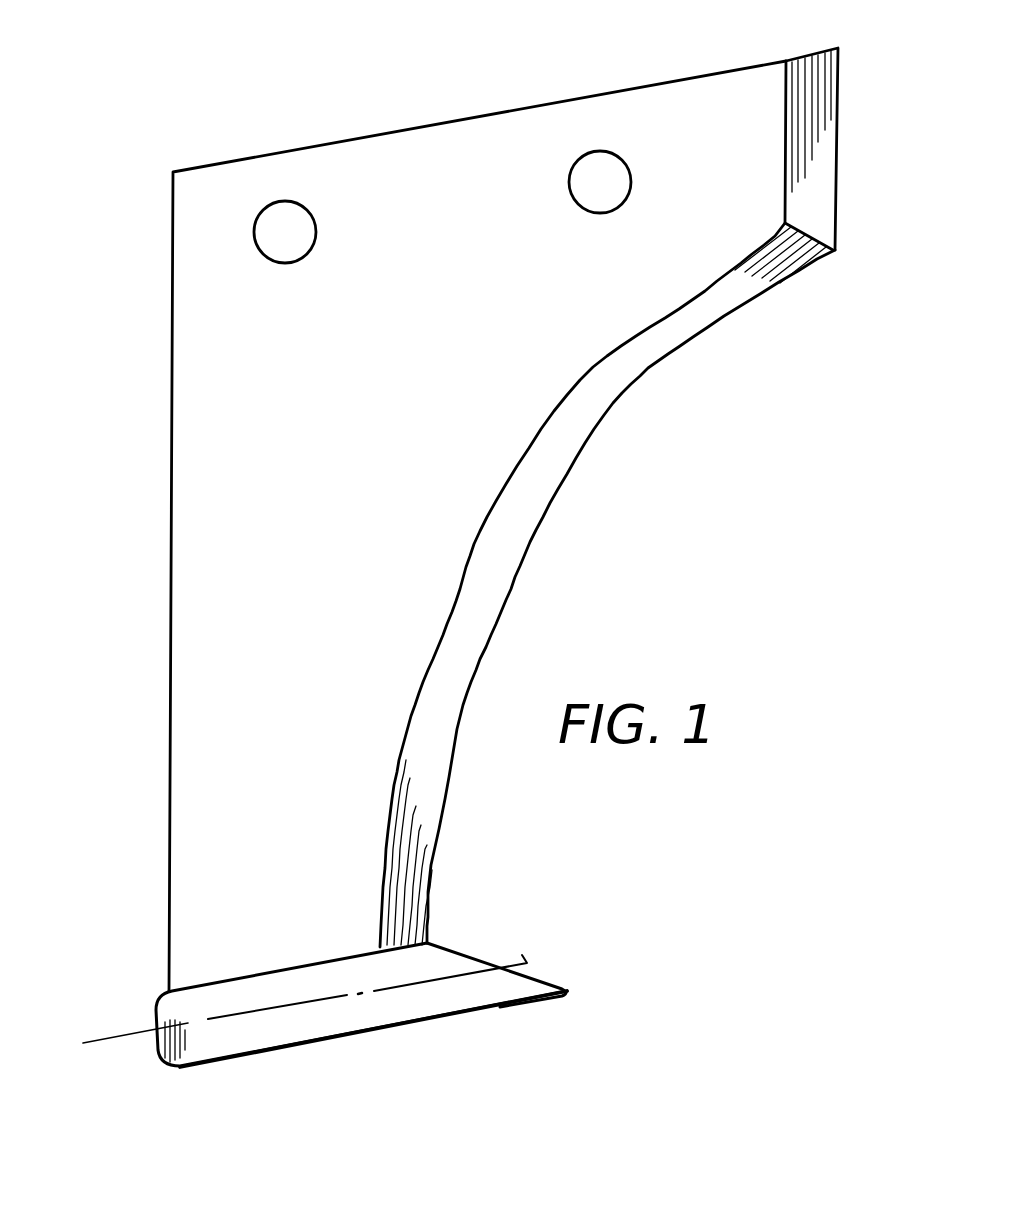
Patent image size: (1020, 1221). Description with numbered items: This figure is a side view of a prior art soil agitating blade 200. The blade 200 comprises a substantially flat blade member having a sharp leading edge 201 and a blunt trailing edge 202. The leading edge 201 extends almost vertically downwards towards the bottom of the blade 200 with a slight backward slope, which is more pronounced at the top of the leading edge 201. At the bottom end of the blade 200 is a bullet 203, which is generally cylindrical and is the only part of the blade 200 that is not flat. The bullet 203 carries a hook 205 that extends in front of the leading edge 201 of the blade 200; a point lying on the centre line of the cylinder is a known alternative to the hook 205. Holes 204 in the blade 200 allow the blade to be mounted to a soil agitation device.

The blade 200 is at (450, 573).
The sharp leading edge 201 is at (690, 340).
The blunt trailing edge 202 is at (170, 713).
The bullet 203 is at (333, 1017).
The holes 204 is at (293, 217).
The hook 205 is at (517, 995).